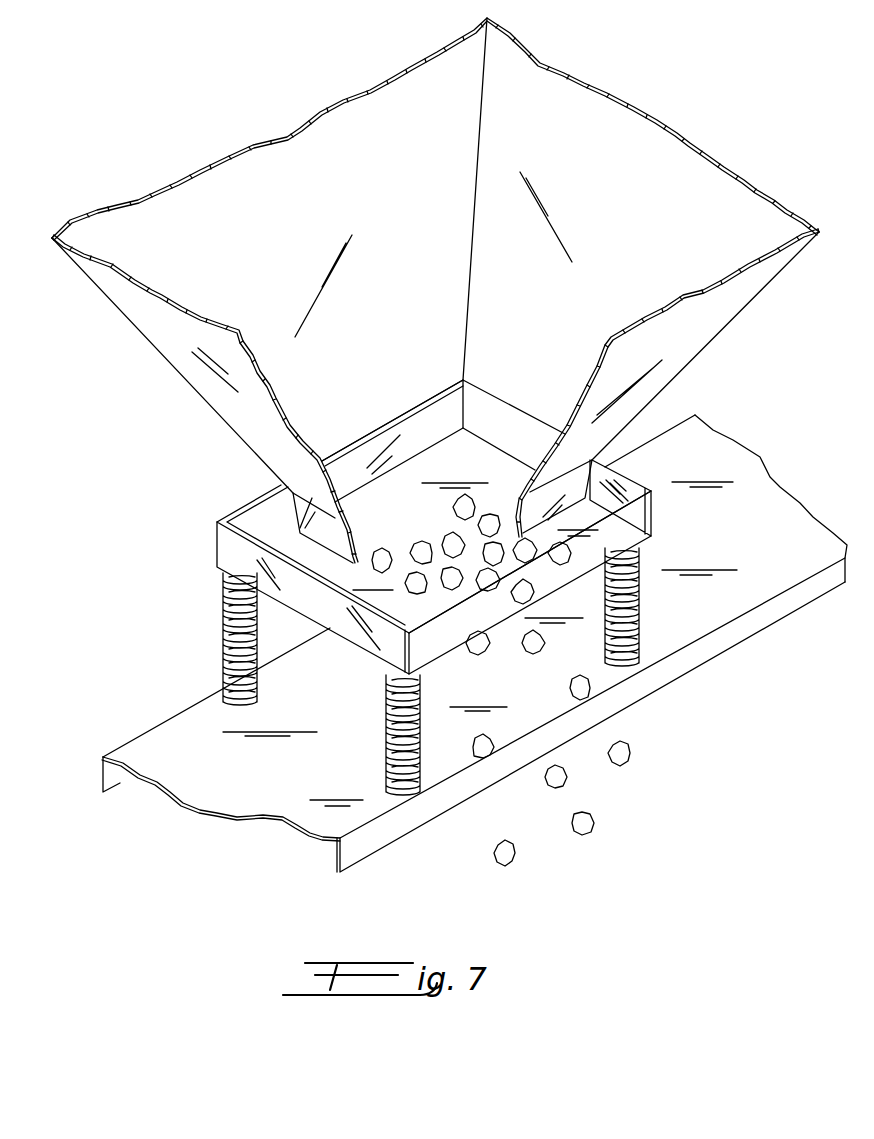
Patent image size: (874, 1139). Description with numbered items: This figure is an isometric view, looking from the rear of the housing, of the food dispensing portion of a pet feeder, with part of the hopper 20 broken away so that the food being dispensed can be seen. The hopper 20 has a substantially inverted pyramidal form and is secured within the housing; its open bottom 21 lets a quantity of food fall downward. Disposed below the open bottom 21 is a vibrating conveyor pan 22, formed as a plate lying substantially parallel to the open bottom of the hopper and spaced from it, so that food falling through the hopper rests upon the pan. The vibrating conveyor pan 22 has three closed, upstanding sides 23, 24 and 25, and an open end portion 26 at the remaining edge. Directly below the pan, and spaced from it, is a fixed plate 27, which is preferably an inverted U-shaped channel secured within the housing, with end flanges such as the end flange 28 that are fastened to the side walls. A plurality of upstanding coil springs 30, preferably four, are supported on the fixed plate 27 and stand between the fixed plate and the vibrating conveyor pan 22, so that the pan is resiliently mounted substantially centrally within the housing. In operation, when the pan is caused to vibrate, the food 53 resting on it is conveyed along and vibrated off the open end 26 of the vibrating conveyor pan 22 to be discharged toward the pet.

The hopper 20 is at (315, 157).
The open bottom 21 is at (320, 548).
The vibrating conveyor pan 22 is at (474, 620).
The closed side 23 is at (343, 628).
The closed side 24 is at (650, 517).
The closed side 25 is at (262, 508).
The open end portion 26 is at (430, 647).
The fixed plate 27 is at (208, 782).
The end flange 28 is at (438, 643).
The coil springs 30 is at (222, 633).
The food 53 is at (597, 817).